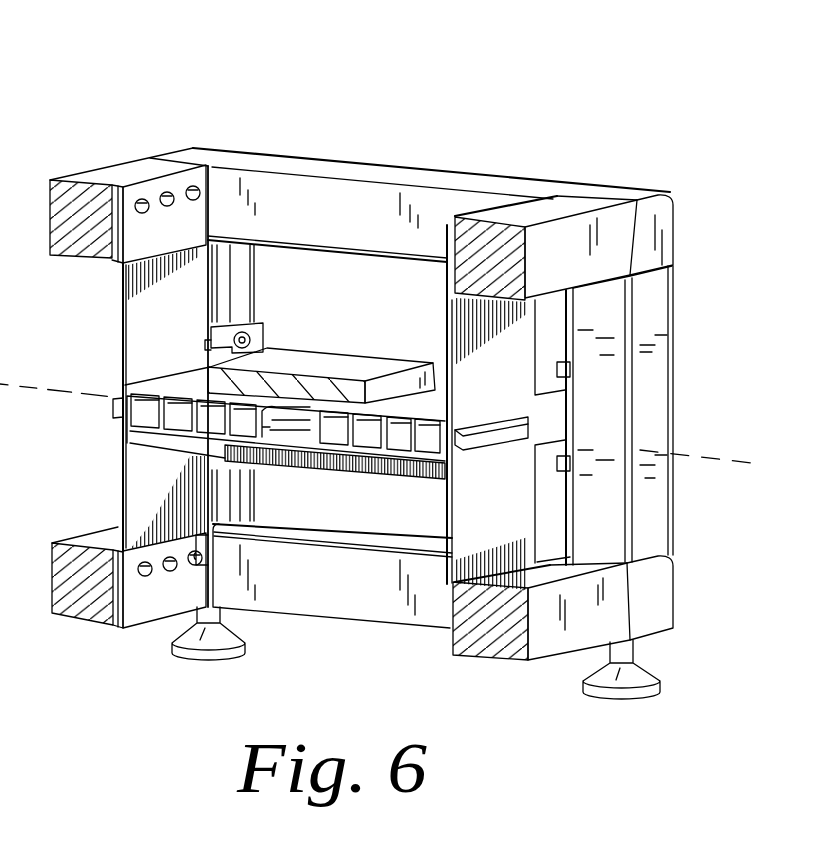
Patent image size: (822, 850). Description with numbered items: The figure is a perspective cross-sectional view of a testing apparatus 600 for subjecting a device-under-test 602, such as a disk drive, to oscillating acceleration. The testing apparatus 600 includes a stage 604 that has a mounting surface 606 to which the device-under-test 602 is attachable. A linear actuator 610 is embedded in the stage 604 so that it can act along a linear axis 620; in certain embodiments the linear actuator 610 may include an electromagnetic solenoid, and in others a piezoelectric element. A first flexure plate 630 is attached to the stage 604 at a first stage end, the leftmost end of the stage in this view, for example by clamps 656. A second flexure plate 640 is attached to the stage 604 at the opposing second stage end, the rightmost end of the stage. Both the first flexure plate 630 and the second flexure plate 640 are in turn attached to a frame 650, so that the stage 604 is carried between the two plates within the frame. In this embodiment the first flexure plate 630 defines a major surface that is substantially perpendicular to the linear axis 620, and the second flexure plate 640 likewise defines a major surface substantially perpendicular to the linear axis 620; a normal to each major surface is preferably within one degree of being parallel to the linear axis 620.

The testing apparatus 600 is at (494, 143).
The device-under-test 602 is at (298, 358).
The stage 604 is at (162, 433).
The mounting surface 606 is at (175, 378).
The linear actuator 610 is at (293, 427).
The linear axis 620 is at (712, 458).
The first flexure plate 630 is at (163, 307).
The second flexure plate 640 is at (493, 508).
The frame 650 is at (667, 232).
The clamps 656 is at (187, 230).